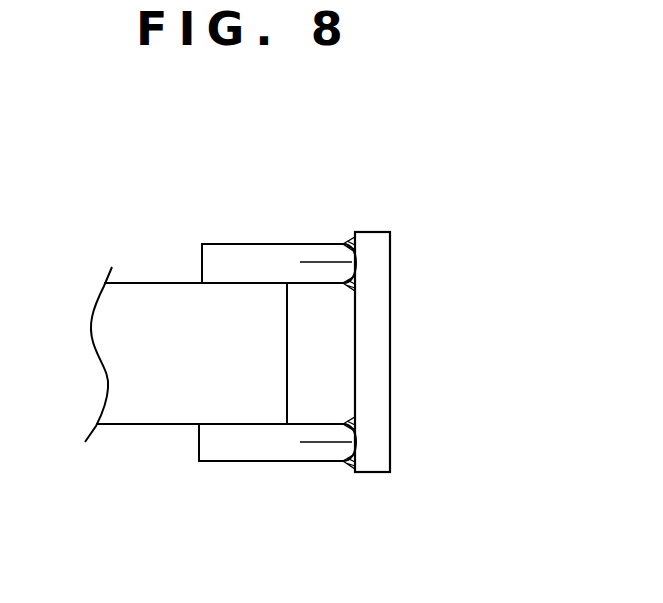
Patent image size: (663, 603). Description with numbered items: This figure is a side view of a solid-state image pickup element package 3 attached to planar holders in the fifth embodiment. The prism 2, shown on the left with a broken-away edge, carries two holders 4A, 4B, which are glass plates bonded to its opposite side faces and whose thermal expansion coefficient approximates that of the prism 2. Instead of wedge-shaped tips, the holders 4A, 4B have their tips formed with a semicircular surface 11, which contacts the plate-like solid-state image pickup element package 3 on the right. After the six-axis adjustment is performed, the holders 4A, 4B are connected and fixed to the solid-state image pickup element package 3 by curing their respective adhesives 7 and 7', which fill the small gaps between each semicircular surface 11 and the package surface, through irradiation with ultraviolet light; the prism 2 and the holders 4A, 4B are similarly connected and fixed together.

The prism 2 is at (142, 282).
The solid-state image pickup element package 3 is at (391, 262).
The holder 4A is at (238, 244).
The holder 4B is at (230, 462).
The adhesive 7 is at (331, 353).
The adhesive 7' is at (358, 345).
The semicircular surface 11 is at (300, 262).